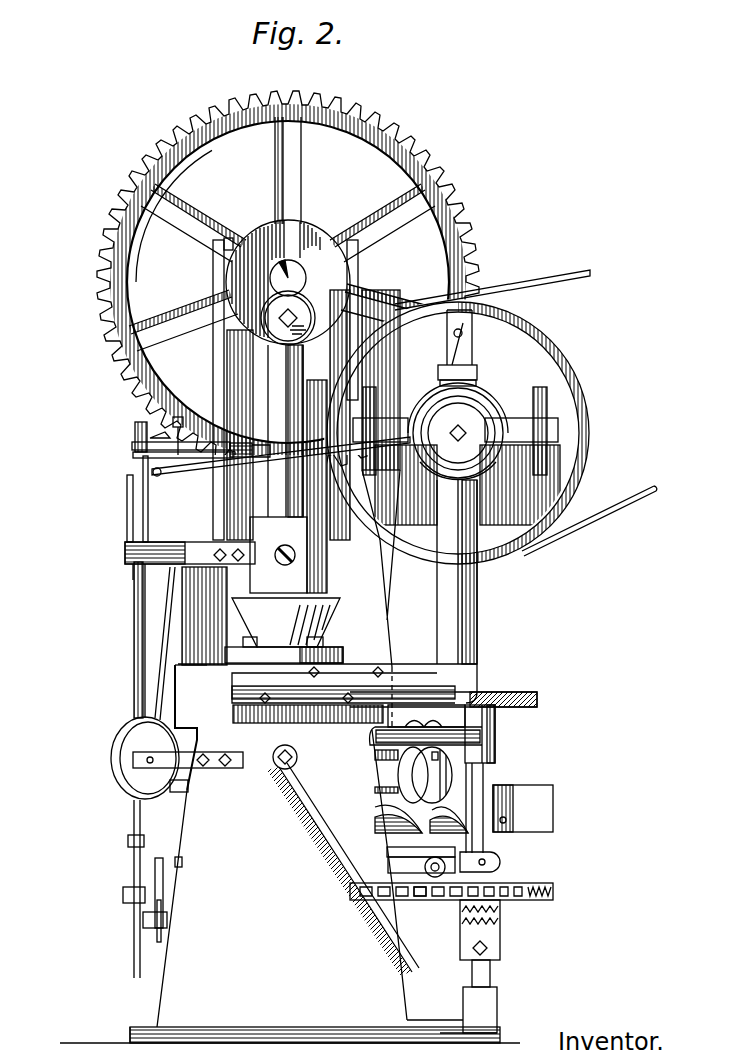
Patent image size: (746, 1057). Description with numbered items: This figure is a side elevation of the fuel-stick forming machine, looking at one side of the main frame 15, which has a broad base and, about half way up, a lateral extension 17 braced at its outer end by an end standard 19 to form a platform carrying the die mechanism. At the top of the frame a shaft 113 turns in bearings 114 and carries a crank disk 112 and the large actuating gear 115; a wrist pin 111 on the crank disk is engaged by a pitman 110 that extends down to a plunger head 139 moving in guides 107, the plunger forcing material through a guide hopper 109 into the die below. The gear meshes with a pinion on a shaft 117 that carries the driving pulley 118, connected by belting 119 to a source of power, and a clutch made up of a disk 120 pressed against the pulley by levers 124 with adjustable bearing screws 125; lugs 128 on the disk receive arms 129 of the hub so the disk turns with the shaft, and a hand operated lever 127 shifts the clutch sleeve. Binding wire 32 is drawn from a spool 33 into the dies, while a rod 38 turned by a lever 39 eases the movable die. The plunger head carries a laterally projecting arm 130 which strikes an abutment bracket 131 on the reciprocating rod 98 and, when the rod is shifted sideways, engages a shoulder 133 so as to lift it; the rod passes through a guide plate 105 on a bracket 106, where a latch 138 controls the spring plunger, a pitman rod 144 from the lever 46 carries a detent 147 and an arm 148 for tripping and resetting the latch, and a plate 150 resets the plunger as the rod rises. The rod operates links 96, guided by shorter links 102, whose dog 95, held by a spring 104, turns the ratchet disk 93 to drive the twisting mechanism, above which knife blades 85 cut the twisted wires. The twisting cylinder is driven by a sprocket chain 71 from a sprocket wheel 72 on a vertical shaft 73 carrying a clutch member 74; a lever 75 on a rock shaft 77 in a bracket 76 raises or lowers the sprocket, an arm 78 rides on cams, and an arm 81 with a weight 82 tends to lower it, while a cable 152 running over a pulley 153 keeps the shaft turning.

The main frame 15 is at (290, 886).
The lateral extension 17 is at (198, 688).
The end standard 19 is at (175, 982).
The binding wire 32 is at (375, 775).
The spool 33 is at (128, 740).
The rod 38 is at (277, 767).
The lever 39 is at (337, 855).
The lever 46 is at (185, 787).
The sprocket chain 71 is at (428, 897).
The driving sprocket wheel 72 is at (556, 891).
The vertical shaft 73 is at (490, 973).
The clutch member 74 is at (500, 932).
The lever 75 is at (500, 860).
The bracket 76 is at (400, 835).
The rock shaft 77 is at (400, 864).
The arm 78 is at (392, 807).
The arm 81 is at (473, 833).
The weight 82 is at (543, 810).
The knife blade 85 is at (425, 790).
The ratchet disk 93 is at (157, 865).
The dog 95 is at (160, 933).
The link 96 is at (140, 842).
The reciprocating rod 98 is at (168, 640).
The shorter link 102 is at (152, 917).
The spring 104 is at (155, 905).
The guide plate 105 is at (133, 445).
The bracket 106 is at (207, 432).
The guide 107 is at (320, 537).
The guide hopper 109 is at (337, 615).
The pitman 110 is at (295, 370).
The wrist pin 111 is at (313, 323).
The crank disk 112 is at (237, 268).
The shaft 113 is at (293, 277).
The bearing 114 is at (220, 290).
The actuating gear 115 is at (438, 172).
The shaft 117 is at (463, 425).
The driving pulley 118 is at (517, 317).
The belting 119 is at (527, 278).
The disk 120 is at (470, 360).
The lever 124 is at (473, 360).
The adjustable bearing screw 125 is at (455, 338).
The hand operated lever 127 is at (162, 472).
The lug 128 is at (542, 398).
The arm 129 is at (550, 433).
The laterally projecting arm 130 is at (132, 547).
The abutment bracket 131 is at (133, 570).
The shoulder 133 is at (137, 542).
The pivoted latch 138 is at (155, 428).
The plunger head 139 is at (278, 555).
The pitman rod 144 is at (140, 654).
The detent 147 is at (150, 423).
The arm 148 is at (133, 458).
The plate 150 is at (128, 507).
The cable 152 is at (542, 702).
The pulley 153 is at (517, 687).